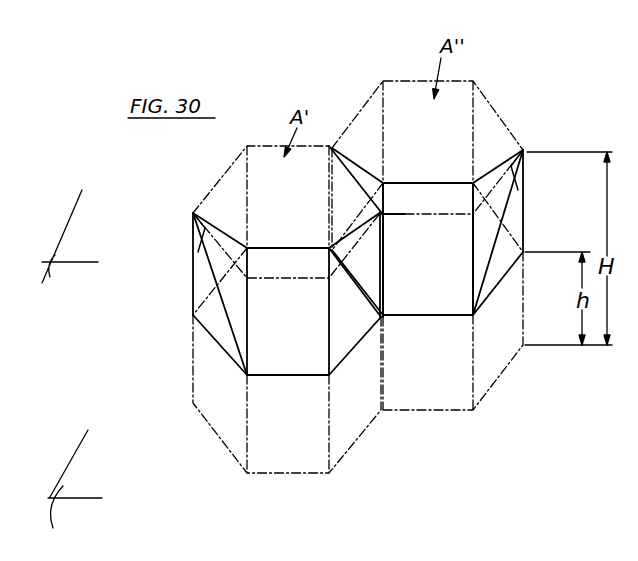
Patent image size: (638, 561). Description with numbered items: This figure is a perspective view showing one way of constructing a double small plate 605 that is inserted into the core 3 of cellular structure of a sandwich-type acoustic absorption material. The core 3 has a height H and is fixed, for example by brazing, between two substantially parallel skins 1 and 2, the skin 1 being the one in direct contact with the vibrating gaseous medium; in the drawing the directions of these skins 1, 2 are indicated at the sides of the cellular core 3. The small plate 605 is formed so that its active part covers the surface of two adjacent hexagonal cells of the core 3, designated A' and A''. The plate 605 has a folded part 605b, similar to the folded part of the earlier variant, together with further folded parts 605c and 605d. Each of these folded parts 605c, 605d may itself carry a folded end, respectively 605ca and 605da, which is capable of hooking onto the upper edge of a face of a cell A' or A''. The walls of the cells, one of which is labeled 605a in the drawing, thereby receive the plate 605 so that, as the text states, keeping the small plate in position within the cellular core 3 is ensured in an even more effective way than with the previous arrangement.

The double small plate 605 is at (437, 193).
The cell side wall 605a is at (263, 265).
The folded part 605b is at (374, 90).
The folded part 605c is at (207, 277).
The folded end 605ca is at (190, 238).
The folded part 605d is at (226, 222).
The folded end 605da is at (524, 166).
The core 3 is at (188, 355).
The skin 1 is at (71, 486).
The skin 2 is at (62, 243).